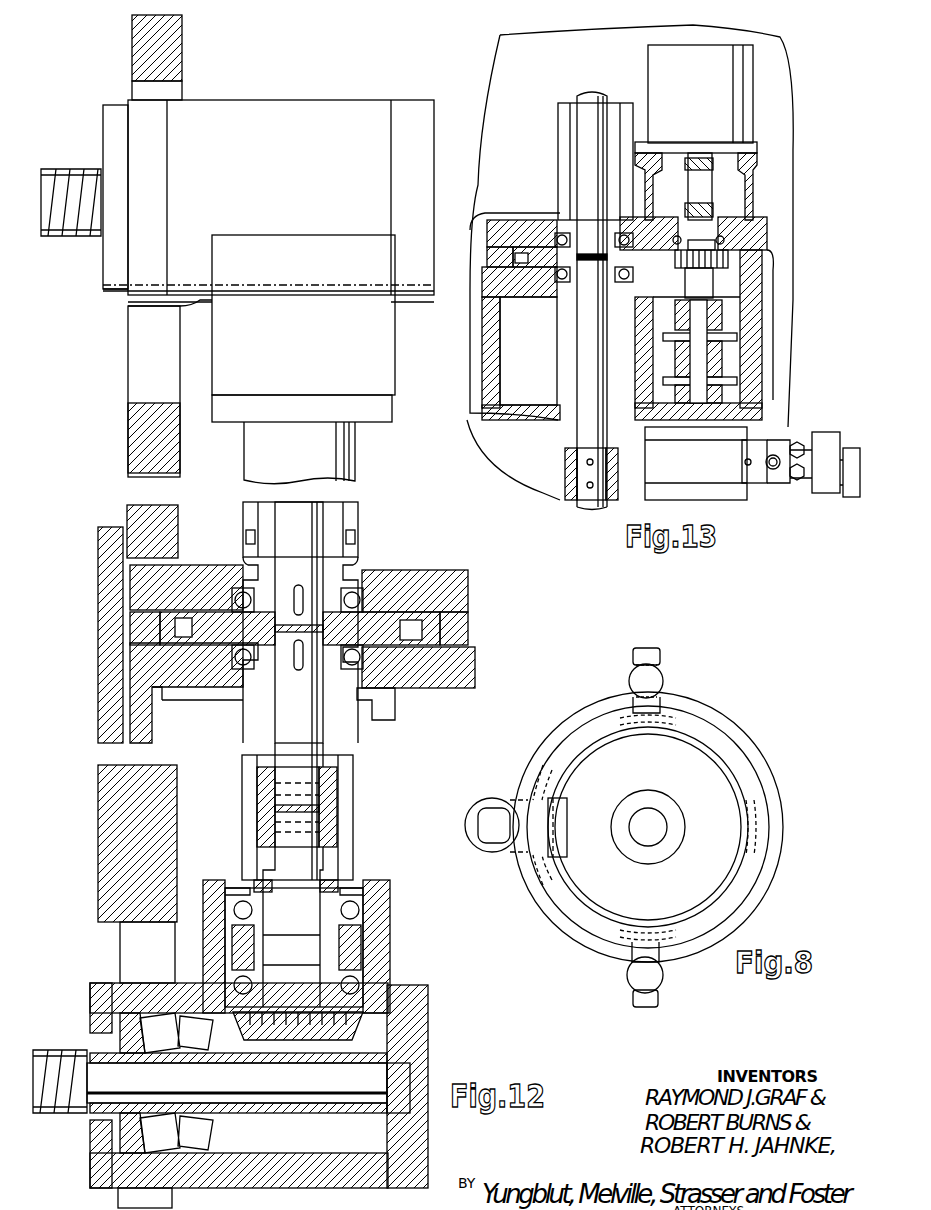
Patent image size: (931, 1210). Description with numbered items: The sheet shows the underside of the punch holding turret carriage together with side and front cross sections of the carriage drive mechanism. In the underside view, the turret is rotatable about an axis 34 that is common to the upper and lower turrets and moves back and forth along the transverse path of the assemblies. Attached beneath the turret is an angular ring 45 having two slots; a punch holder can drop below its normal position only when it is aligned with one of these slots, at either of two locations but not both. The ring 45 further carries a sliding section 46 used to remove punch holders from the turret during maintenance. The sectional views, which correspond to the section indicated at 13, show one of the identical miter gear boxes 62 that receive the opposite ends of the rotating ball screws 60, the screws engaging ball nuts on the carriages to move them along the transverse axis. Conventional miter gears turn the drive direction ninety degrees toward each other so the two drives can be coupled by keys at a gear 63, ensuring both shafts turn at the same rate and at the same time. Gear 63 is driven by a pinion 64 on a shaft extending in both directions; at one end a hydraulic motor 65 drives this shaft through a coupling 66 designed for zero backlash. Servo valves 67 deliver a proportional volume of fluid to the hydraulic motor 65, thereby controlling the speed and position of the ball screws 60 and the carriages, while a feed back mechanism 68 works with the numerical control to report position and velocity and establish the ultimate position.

In FIG. 12, the section line 13- 13 is at (272, 492).
In FIG. 8, the axis 34 is at (652, 825).
In FIG. 8, the angular ring 45 is at (783, 840).
In FIG. 8, the sliding section 46 is at (567, 817).
In FIG. 12, the ball screw 60 is at (55, 1050).
In FIG. 12, the miter gear box 62 is at (436, 1032).
In FIG. 12, the gear 63 is at (422, 628).
In FIG. 13, the gear 63 is at (525, 253).
In FIG. 13, the pinion 64 is at (733, 260).
In FIG. 13, the hydraulic motor 65 is at (712, 500).
In FIG. 13, the coupling 66 is at (735, 330).
In FIG. 13, the servo valve 67 is at (830, 433).
In FIG. 13, the feed back mechanism 68 is at (752, 102).